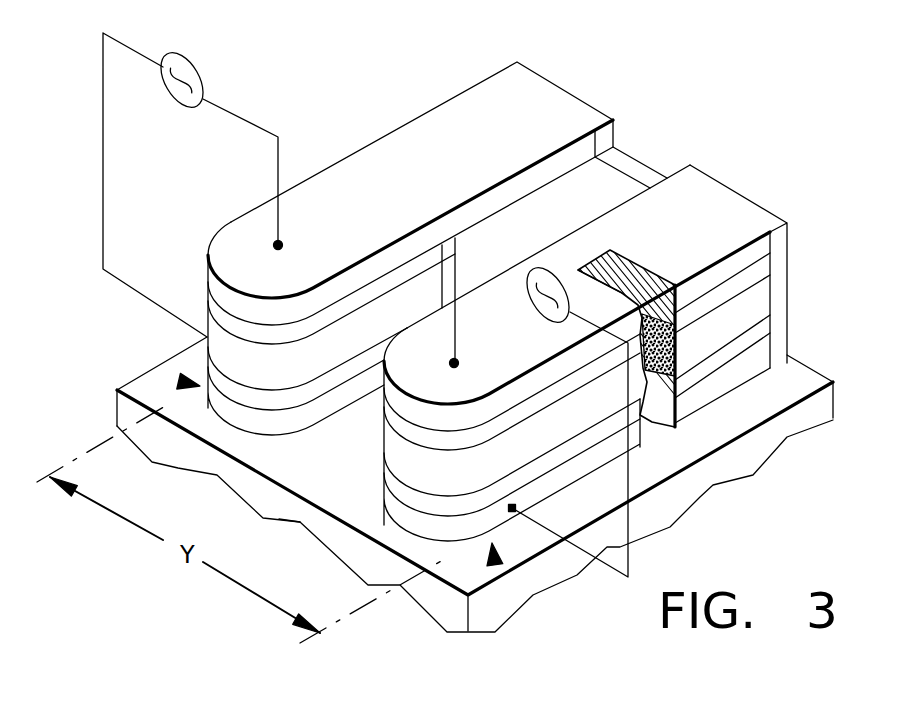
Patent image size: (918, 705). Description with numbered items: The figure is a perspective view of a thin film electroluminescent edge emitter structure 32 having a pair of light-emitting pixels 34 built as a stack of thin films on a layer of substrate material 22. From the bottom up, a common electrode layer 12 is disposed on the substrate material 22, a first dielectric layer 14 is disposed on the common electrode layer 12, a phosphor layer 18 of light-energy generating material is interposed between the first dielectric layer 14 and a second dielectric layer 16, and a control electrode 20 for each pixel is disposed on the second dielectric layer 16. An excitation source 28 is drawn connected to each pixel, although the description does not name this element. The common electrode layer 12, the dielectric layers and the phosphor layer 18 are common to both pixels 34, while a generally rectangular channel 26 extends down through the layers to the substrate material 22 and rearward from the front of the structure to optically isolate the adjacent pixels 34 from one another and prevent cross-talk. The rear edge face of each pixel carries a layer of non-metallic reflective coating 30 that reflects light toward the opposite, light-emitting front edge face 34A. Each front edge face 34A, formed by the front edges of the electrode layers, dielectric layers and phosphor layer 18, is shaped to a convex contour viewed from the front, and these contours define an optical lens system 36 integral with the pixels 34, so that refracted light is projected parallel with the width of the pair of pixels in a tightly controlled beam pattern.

The common electrode layer 12 is at (748, 373).
The first dielectric layer 14 is at (760, 339).
The second dielectric layer 16 is at (762, 273).
The phosphor layer 18 is at (757, 314).
The control electrodes 20 is at (477, 108).
The substrate material 22 is at (758, 449).
The channel 26 is at (279, 519).
The AC voltage source 28 is at (206, 55).
The reflective coating 30 is at (758, 209).
The TFEL edge emitter structure 32 is at (678, 112).
The light-emitting pixels 34 is at (532, 108).
The light-emitting front edge faces 34A is at (252, 368).
The optical lens system 36 is at (183, 382).